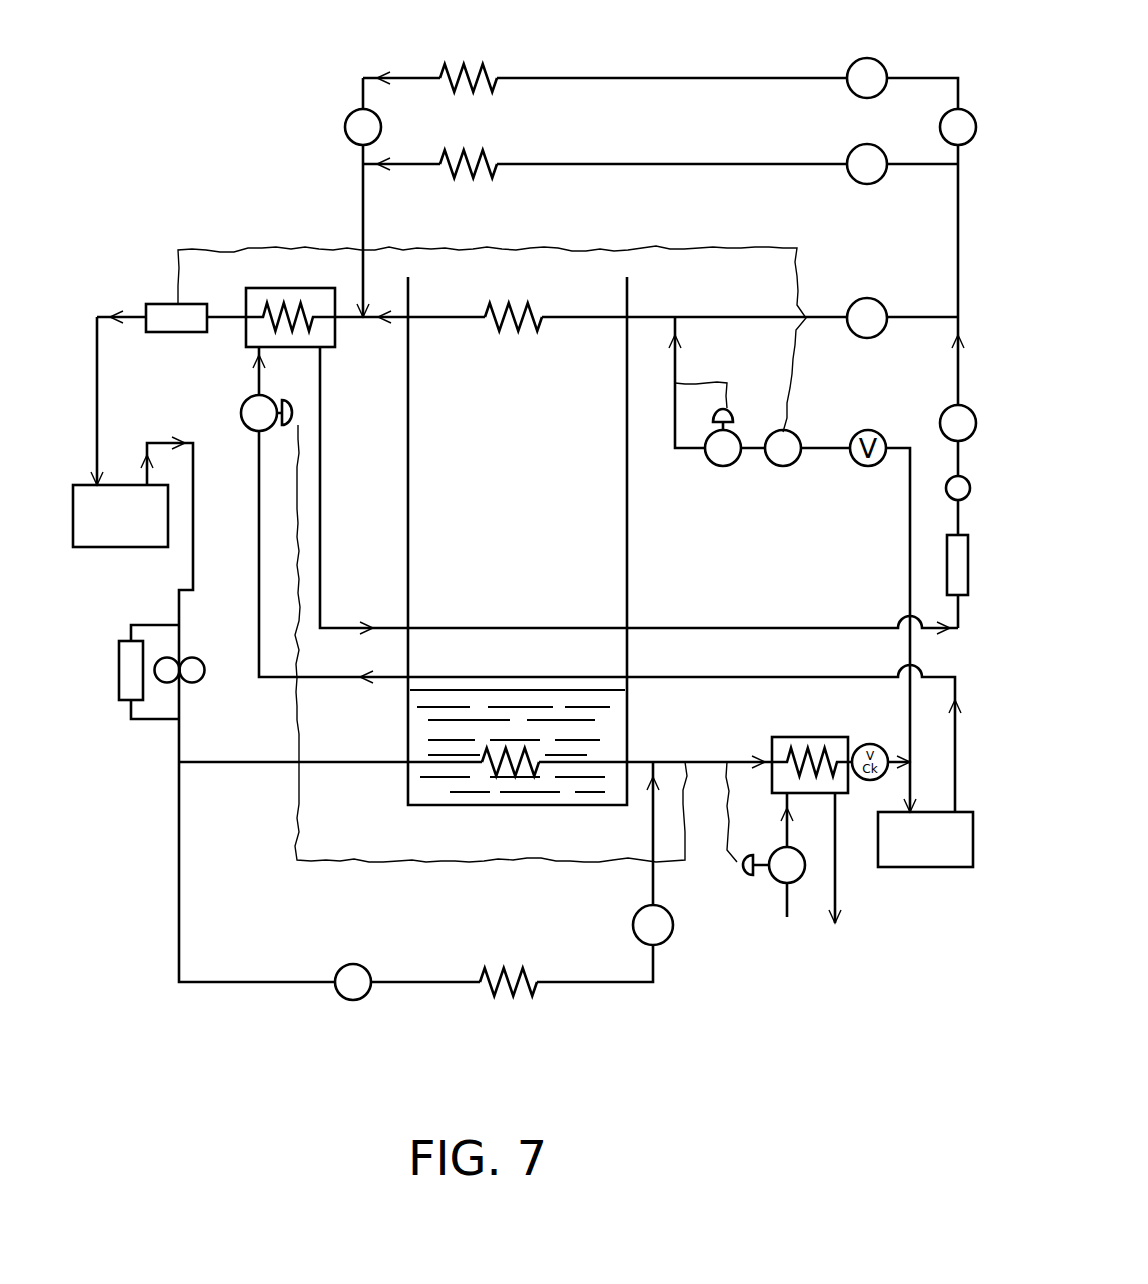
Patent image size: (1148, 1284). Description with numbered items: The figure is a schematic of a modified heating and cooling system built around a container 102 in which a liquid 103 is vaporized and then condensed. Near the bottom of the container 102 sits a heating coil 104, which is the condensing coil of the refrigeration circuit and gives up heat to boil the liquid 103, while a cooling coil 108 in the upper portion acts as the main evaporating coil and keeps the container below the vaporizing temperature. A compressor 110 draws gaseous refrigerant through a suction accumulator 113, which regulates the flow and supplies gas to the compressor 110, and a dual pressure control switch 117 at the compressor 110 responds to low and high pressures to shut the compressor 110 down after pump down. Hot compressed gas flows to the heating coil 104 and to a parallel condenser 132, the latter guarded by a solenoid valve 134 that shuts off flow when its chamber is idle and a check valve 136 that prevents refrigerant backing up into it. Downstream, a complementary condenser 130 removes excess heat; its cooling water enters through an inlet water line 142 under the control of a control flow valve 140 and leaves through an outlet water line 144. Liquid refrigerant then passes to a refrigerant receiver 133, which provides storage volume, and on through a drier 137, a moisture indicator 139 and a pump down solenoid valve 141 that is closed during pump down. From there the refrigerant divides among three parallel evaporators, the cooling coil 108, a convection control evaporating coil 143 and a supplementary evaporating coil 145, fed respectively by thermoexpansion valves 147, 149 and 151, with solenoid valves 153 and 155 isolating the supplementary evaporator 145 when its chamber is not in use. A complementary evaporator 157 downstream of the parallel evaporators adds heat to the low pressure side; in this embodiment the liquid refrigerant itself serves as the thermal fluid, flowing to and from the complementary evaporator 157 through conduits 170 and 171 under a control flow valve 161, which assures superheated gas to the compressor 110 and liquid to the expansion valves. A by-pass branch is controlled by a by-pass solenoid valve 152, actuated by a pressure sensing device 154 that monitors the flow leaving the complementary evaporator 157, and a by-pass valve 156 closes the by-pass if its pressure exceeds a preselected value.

The container 102 is at (628, 543).
The liquid 103 is at (605, 716).
The heating coil 104 is at (526, 778).
The cooling coil 108 is at (493, 321).
The compressor 110 is at (184, 683).
The suction accumulator 113 is at (137, 548).
The dual pressure control switch 117 is at (118, 692).
The complementary condenser 130 is at (786, 737).
The condenser 132 is at (520, 1000).
The refrigerant receiver 133 is at (950, 868).
The solenoid valve 134 is at (345, 1000).
The check valve 136 is at (633, 927).
The drier 137 is at (946, 560).
The moisture indicator 139 is at (950, 477).
The control flow valve 140 is at (737, 866).
The pump down solenoid valve 141 is at (951, 407).
The inlet water line 142 is at (788, 830).
The evaporating coil 143 is at (452, 160).
The outlet water line 144 is at (836, 900).
The evaporating coil 145 is at (446, 66).
The thermoexpansion valve 147 is at (869, 298).
The thermoexpansion valve 149 is at (860, 183).
The thermoexpansion valve 151 is at (853, 65).
The by-pass solenoid valve 152 is at (795, 470).
The solenoid valve 153 is at (938, 127).
The pressure sensing device 154 is at (172, 303).
The solenoid valve 155 is at (344, 127).
The by-pass valve 156 is at (729, 467).
The complementary evaporator 157 is at (277, 288).
The control flow valve 161 is at (271, 397).
The conduit 170 is at (790, 628).
The conduit 171 is at (780, 680).